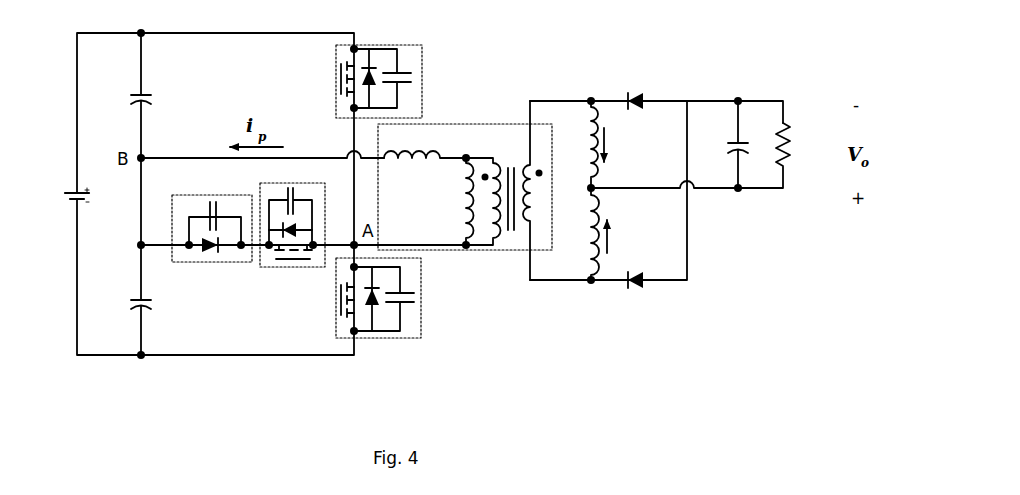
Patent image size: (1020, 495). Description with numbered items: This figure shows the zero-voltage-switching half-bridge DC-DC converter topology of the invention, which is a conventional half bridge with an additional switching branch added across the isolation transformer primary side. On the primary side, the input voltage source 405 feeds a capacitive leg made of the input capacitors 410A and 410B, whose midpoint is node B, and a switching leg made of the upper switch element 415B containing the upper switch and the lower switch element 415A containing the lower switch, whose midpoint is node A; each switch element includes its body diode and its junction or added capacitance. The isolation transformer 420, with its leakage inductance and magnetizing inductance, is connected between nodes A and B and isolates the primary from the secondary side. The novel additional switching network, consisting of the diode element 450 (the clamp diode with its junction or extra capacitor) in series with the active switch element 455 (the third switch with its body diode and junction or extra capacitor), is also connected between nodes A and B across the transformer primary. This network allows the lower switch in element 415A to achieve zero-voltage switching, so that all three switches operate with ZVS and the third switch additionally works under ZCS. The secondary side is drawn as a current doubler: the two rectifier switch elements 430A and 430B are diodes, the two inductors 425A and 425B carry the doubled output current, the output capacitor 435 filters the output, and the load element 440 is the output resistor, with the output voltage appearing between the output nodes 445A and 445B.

The input voltage source 405 is at (65, 180).
The input capacitor 410A is at (127, 96).
The input capacitor 410B is at (125, 308).
The lower switch element 415A is at (427, 335).
The upper switch element 415B is at (463, 42).
The isolation transformer 420 is at (479, 122).
The inductor 425A is at (586, 121).
The inductor 425B is at (584, 267).
The switch element 430A is at (621, 91).
The switch element 430B is at (622, 295).
The output capacitor 435 is at (726, 122).
The load element 440 is at (791, 172).
The output node 445A is at (742, 197).
The output node 445B is at (743, 93).
The diode element 450 is at (236, 273).
The active switch element 455 is at (276, 278).